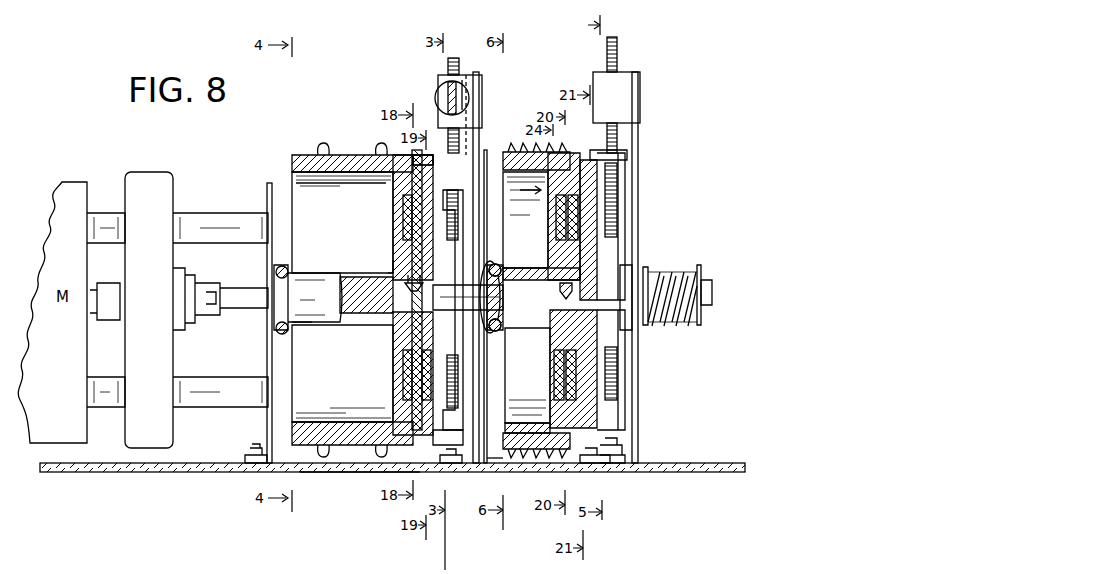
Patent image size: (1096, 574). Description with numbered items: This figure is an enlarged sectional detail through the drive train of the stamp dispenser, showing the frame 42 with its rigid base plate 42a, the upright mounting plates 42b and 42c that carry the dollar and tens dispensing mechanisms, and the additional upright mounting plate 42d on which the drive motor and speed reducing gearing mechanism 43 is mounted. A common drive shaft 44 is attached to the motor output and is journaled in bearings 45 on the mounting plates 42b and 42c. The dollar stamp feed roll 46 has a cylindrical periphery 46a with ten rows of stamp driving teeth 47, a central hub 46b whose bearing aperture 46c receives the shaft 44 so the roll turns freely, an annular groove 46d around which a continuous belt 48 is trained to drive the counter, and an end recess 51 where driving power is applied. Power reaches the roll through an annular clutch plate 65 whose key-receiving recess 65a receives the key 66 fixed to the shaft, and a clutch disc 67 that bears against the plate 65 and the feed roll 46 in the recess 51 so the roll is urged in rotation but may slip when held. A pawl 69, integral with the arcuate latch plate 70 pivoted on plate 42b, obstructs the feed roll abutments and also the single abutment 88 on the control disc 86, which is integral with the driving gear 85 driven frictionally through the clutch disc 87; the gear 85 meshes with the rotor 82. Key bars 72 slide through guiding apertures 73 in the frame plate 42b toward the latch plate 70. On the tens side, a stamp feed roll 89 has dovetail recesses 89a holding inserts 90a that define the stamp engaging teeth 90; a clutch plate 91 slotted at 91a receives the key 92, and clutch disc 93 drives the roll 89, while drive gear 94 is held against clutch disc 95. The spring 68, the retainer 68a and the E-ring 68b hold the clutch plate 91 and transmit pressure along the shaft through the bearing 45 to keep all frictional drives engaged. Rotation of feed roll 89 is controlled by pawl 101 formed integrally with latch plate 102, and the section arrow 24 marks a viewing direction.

The frame 42 is at (222, 480).
The base plate 42a is at (363, 473).
The upright mounting plate 42b is at (486, 150).
The upright mounting plate 42c is at (640, 130).
The upright mounting plate 42d is at (267, 193).
The drive motor and speed reducing gearing mechanism 43 is at (148, 172).
The common drive shaft 44 is at (357, 311).
The bearings 45 is at (486, 289).
The stamp feed roll 46 is at (344, 164).
The cylindrical periphery 46a is at (353, 178).
The central hub 46b is at (362, 273).
The bearing aperture 46c is at (386, 270).
The annular groove 46d is at (302, 323).
The stamp driving teeth 47 is at (318, 155).
The continuous belt 48 is at (288, 273).
The recess 51 is at (404, 204).
The clutch plate 65 is at (412, 338).
The key-receiving recess 65a is at (468, 297).
The key 66 is at (410, 287).
The clutch disc 67 is at (403, 372).
The spring 68 is at (684, 324).
The retainer 68a is at (702, 326).
The E-ring 68b is at (704, 281).
The pawl 69 is at (429, 163).
The latch plate 70 is at (482, 66).
The key bar 72 is at (438, 95).
The key bar guiding apertures 73 is at (466, 78).
The rotor 82 is at (446, 75).
The driving gear 85 is at (454, 380).
The control disc 86 is at (455, 430).
The clutch disc 87 is at (422, 390).
The abutment 88 is at (433, 136).
The stamp feed roll 89 is at (543, 184).
The dovetail recesses 89a is at (591, 454).
The stamp engaging and driving teeth 90 is at (515, 156).
The inserts 90a is at (500, 451).
The clutch plate 91 is at (560, 241).
The slot 91a is at (580, 287).
The key 92 is at (560, 290).
The clutch disc 93 is at (554, 379).
The drive gear 94 is at (610, 318).
The clutch disc 95 is at (580, 385).
The pawl 101 is at (600, 147).
The latch plate 102 is at (634, 72).
The direction arrow 24 is at (516, 191).